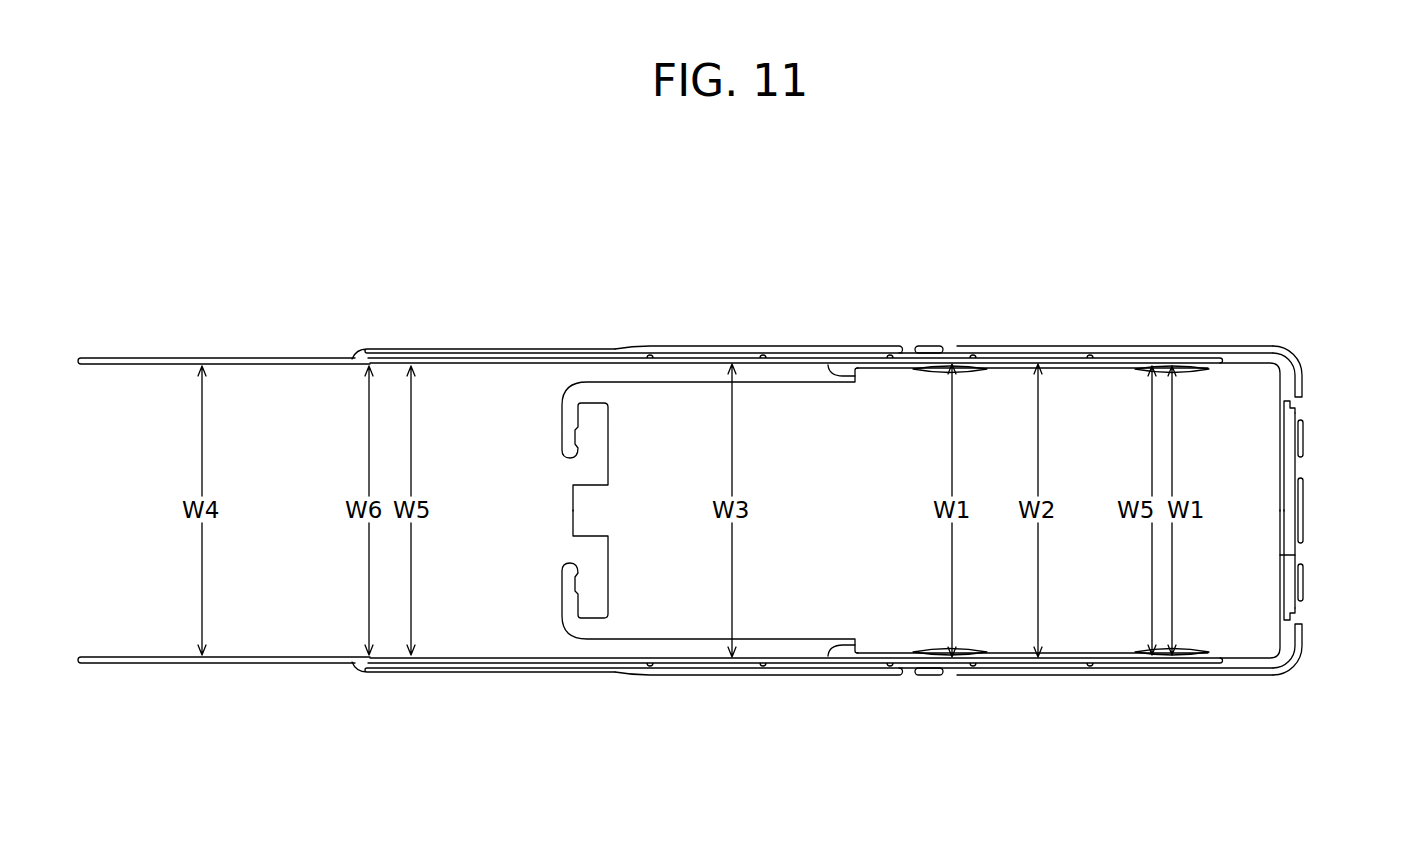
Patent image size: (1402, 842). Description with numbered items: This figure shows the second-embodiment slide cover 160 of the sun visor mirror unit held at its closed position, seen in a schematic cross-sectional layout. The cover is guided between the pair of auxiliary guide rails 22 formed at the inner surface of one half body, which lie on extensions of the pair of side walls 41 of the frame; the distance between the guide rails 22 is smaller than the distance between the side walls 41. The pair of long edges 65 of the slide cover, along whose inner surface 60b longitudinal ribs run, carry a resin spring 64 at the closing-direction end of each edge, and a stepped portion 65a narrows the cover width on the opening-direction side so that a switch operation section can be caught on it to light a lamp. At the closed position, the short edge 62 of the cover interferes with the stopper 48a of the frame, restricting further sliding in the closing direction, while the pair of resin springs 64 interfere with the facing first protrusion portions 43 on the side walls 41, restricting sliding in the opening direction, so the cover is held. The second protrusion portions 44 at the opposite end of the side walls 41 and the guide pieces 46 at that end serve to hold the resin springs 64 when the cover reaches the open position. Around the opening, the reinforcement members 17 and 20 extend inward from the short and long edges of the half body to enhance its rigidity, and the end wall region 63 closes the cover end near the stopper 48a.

The auxiliary guide rail 22 is at (304, 357).
The guide piece 46 is at (372, 356).
The long edge 65 is at (658, 380).
The side wall 41 is at (738, 360).
The stepped portion 65a is at (828, 364).
The inner surface of the slide cover 60b is at (908, 382).
The resin spring 64 is at (955, 362).
The reinforcement member 20 is at (1068, 350).
The slide cover 160 is at (1132, 375).
The rounded end wall 63 is at (1305, 373).
The second protrusion portion 44 is at (420, 368).
The first protrusion portion 43 is at (1160, 375).
The short edge 62 is at (606, 465).
The stopper 48a is at (1292, 468).
The reinforcement member 17 is at (1302, 510).